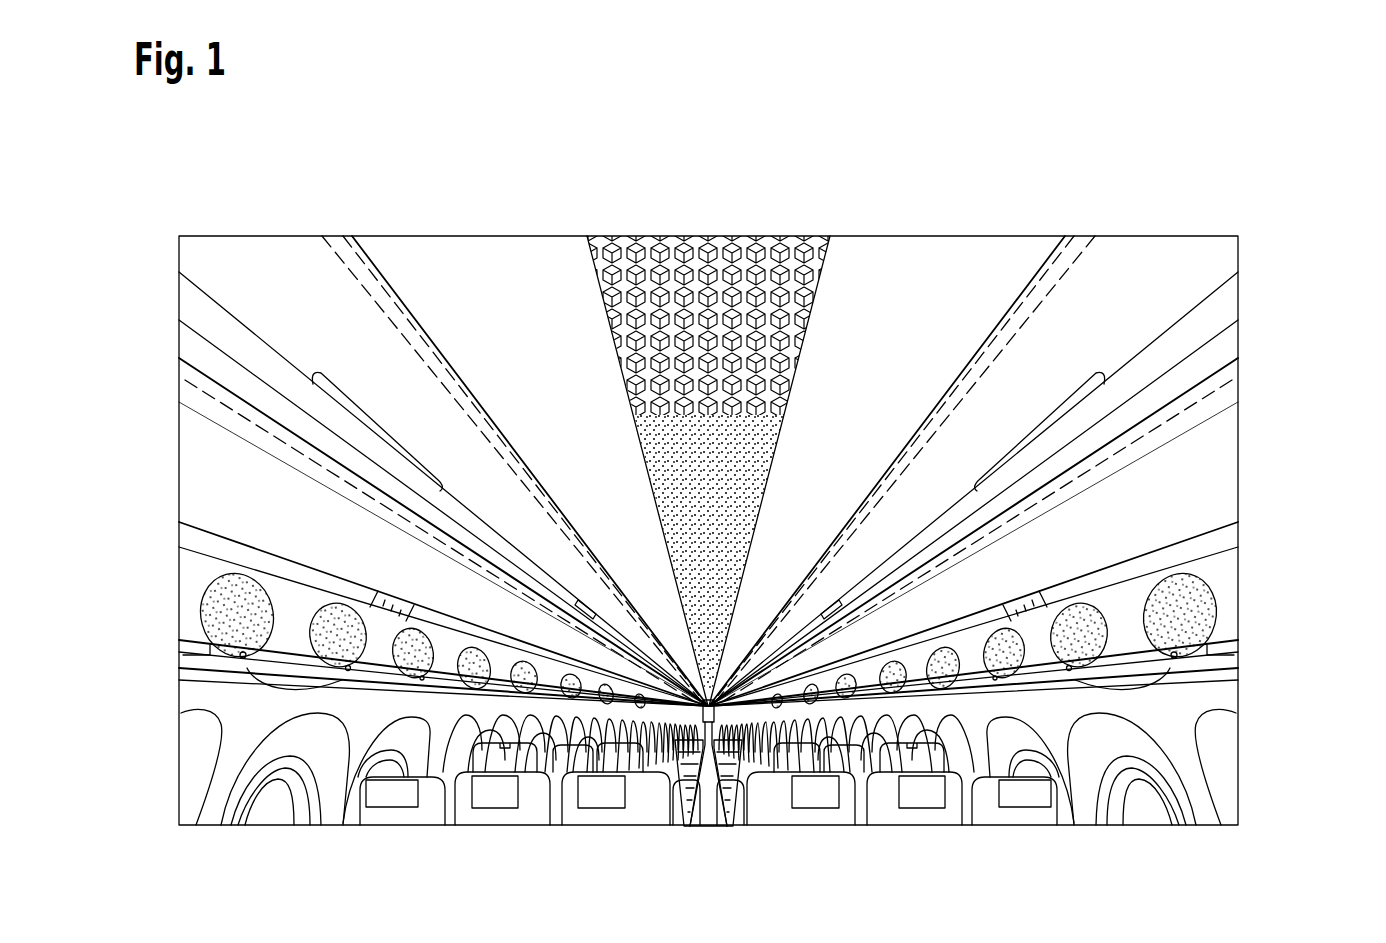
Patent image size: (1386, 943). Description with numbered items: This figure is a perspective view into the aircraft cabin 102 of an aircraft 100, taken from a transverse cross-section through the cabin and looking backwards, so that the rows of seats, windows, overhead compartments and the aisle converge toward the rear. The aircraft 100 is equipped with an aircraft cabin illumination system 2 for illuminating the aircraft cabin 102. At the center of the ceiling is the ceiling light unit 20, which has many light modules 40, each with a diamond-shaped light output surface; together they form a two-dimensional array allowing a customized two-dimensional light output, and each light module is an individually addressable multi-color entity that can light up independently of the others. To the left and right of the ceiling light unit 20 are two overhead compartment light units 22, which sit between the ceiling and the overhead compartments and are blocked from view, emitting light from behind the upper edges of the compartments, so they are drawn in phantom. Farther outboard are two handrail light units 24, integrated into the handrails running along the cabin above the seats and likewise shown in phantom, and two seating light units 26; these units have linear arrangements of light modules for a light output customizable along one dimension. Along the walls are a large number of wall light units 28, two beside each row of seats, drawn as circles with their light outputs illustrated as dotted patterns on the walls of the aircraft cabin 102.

The aircraft cabin illumination system 2 is at (541, 234).
The ceiling light unit 20 is at (803, 292).
The overhead compartment light unit 22 is at (341, 234).
The handrail light unit 24 is at (185, 380).
The seating light unit 26 is at (215, 547).
The wall light unit 28 is at (245, 655).
The light module 40 is at (632, 240).
The aircraft 100 is at (1242, 451).
The aircraft cabin 102 is at (713, 792).